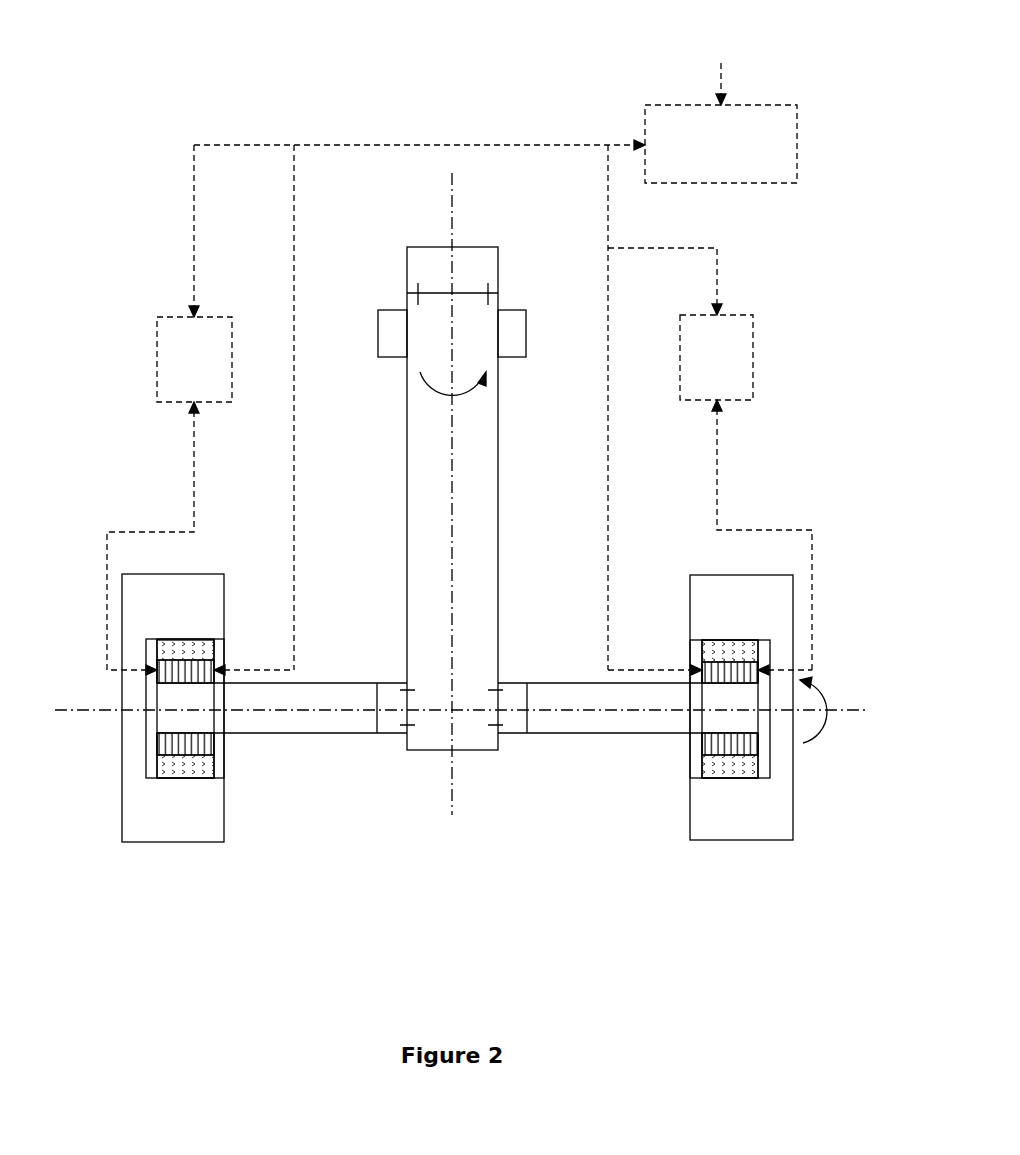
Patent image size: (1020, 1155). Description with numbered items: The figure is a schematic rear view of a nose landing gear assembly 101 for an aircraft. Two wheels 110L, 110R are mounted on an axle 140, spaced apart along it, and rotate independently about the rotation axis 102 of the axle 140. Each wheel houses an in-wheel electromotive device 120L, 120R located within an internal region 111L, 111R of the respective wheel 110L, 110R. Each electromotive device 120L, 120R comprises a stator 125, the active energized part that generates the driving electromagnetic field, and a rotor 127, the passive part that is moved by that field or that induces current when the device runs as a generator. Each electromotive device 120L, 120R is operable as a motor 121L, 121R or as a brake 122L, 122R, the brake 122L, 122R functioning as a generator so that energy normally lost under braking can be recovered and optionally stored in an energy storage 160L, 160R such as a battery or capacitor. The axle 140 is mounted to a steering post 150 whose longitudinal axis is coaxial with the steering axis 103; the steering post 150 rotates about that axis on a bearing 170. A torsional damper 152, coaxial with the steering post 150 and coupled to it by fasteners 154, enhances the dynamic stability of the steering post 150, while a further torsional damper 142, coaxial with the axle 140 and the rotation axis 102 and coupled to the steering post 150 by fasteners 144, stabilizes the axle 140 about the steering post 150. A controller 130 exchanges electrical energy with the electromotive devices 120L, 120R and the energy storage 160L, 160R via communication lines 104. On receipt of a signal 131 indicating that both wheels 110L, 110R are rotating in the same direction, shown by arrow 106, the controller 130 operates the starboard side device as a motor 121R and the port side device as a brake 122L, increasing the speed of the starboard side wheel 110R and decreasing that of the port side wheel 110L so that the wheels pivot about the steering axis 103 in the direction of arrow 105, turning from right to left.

The nose landing gear assembly 101 is at (160, 103).
The rotation axis 102 is at (540, 707).
The steering axis 103 is at (452, 197).
The communication lines 104 is at (194, 207).
The arrow 105 is at (440, 400).
The arrow 106 is at (828, 697).
The port side wheel 110L is at (122, 600).
The starboard side wheel 110R is at (793, 598).
The internal region 111L is at (150, 725).
The internal region 111R is at (763, 735).
The electromotive device 120L is at (177, 807).
The electromotive device 120R is at (724, 808).
The motor 121L is at (200, 818).
The motor 121R is at (748, 819).
The brake 122L is at (162, 808).
The brake 122R is at (706, 808).
The stator 125 is at (168, 775).
The rotor 127 is at (200, 775).
The controller 130 is at (797, 138).
The signal 131 is at (725, 73).
The axle 140 is at (272, 733).
The torsional damper 142 is at (388, 727).
The fasteners 144 is at (497, 690).
The steering post 150 is at (498, 432).
The torsional damper 152 is at (498, 265).
The fasteners 154 is at (418, 293).
The energy storage 160L is at (157, 347).
The energy storage 160R is at (753, 353).
The bearing 170 is at (395, 340).